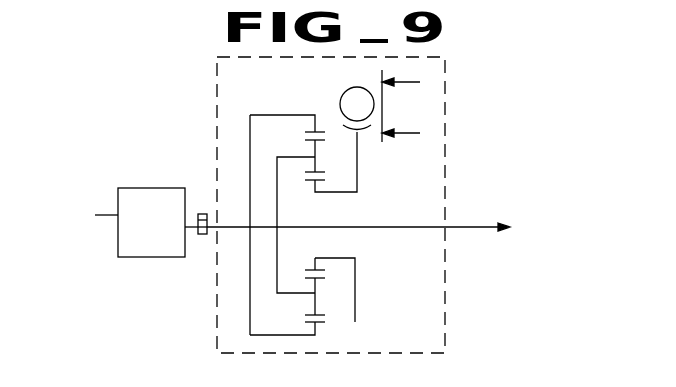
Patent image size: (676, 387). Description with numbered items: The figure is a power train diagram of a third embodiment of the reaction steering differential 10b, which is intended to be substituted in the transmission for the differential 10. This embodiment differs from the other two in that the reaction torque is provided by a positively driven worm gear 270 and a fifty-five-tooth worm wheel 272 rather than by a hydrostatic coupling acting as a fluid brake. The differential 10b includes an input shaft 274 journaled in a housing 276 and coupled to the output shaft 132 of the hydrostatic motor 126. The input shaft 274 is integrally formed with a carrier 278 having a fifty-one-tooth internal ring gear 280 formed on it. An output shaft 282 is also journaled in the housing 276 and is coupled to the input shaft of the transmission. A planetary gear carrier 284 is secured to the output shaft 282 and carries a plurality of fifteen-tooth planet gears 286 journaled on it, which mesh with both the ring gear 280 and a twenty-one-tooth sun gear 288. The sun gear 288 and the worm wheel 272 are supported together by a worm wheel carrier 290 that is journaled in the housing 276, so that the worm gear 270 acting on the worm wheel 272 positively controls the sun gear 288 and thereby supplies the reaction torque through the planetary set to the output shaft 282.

The differential 10 is at (401, 106).
The reaction steering differential 10b is at (468, 103).
The hydrostatic motor 126 is at (80, 212).
The output shaft 132 is at (192, 226).
The worm gear 270 is at (352, 88).
The worm wheel 272 is at (362, 131).
The input shaft 274 is at (230, 222).
The housing 276 is at (217, 73).
The carrier 278 is at (250, 142).
The internal ring gear 280 is at (316, 116).
The output shaft 282 is at (457, 226).
The planetary gear carrier 284 is at (280, 210).
The planet gears 286 is at (311, 141).
The sun gear 288 is at (306, 268).
The worm wheel carrier 290 is at (355, 258).